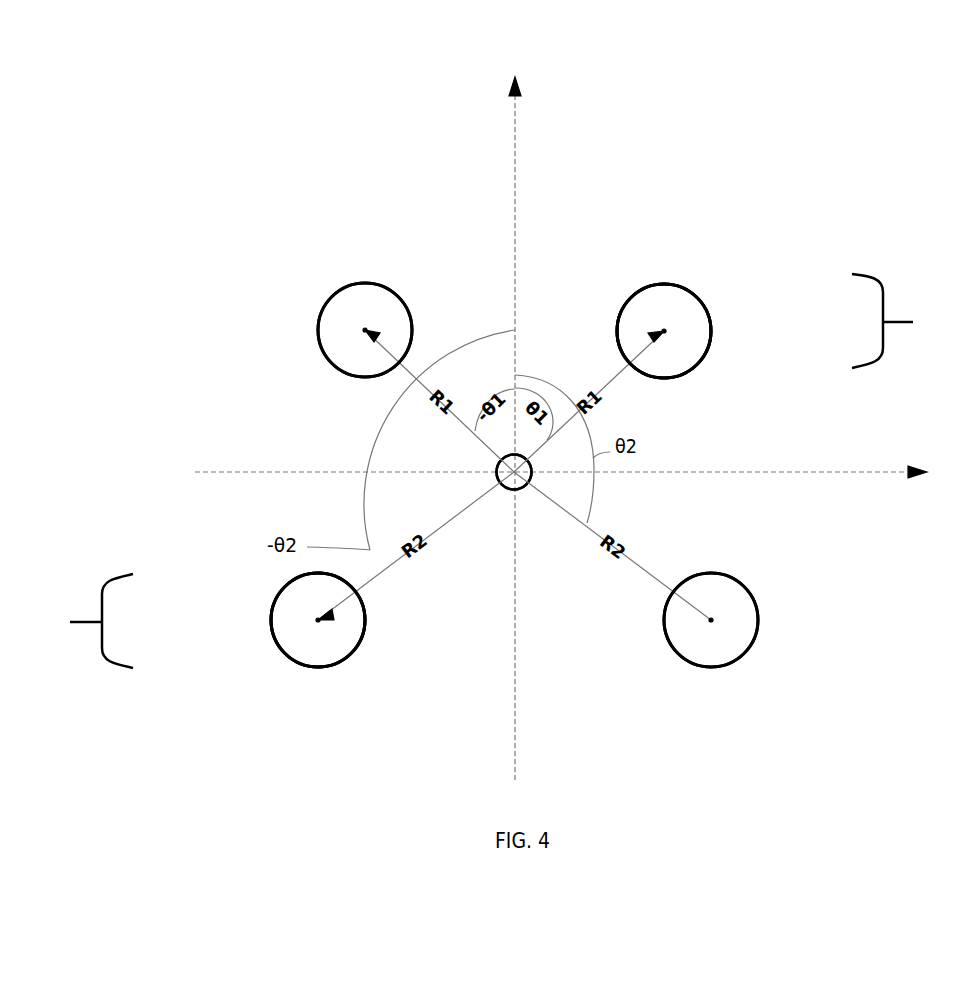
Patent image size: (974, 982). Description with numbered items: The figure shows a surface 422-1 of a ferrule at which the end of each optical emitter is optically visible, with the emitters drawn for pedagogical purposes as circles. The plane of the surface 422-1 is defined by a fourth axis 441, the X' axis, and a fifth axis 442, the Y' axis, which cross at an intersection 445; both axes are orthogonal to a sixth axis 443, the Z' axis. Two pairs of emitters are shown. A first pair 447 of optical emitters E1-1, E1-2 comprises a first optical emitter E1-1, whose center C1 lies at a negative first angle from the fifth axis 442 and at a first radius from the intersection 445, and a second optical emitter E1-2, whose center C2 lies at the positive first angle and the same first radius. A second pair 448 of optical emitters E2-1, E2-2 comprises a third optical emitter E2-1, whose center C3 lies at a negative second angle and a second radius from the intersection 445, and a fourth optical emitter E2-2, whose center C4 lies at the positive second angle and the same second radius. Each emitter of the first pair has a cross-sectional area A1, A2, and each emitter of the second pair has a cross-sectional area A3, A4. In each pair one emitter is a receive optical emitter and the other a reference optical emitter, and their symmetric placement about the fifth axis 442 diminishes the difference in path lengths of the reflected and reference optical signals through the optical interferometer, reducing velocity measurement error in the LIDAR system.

The surface 422-1 is at (570, 190).
The fourth axis 441 is at (776, 473).
The fifth axis 442 is at (515, 226).
The sixth axis 443 is at (498, 481).
The intersection 445 is at (502, 458).
The first pair of optical emitters 447 is at (785, 326).
The second pair of optical emitters 448 is at (194, 620).
The first optical emitter E1-1 is at (333, 292).
The second optical emitter E1-2 is at (664, 284).
The third optical emitter E2-1 is at (270, 620).
The fourth optical emitter E2-2 is at (758, 620).
The center of the first optical emitter C1 is at (365, 330).
The center of the second optical emitter C2 is at (664, 331).
The center of the third optical emitter C3 is at (318, 620).
The center of the fourth optical emitter C4 is at (711, 620).
The cross-sectional area A1 is at (318, 331).
The cross-sectional area A2 is at (698, 367).
The cross-sectional area A3 is at (315, 668).
The cross-sectional area A4 is at (711, 668).